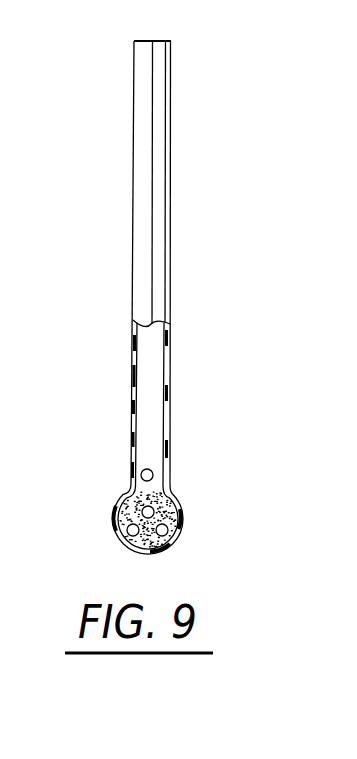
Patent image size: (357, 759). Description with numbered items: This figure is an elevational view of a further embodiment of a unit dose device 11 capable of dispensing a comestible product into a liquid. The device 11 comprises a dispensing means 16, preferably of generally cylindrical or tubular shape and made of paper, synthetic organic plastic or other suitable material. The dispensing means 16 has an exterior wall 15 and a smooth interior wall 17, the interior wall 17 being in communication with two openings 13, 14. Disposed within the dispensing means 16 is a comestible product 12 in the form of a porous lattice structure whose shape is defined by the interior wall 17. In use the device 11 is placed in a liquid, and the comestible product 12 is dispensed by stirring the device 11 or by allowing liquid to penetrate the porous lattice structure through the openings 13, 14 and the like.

The device 11 is at (134, 186).
The comestible product 12 is at (163, 538).
The opening 13 is at (152, 472).
The opening 14 is at (153, 509).
The exterior wall 15 is at (171, 383).
The dispensing means 16 is at (140, 258).
The interior wall 17 is at (133, 390).